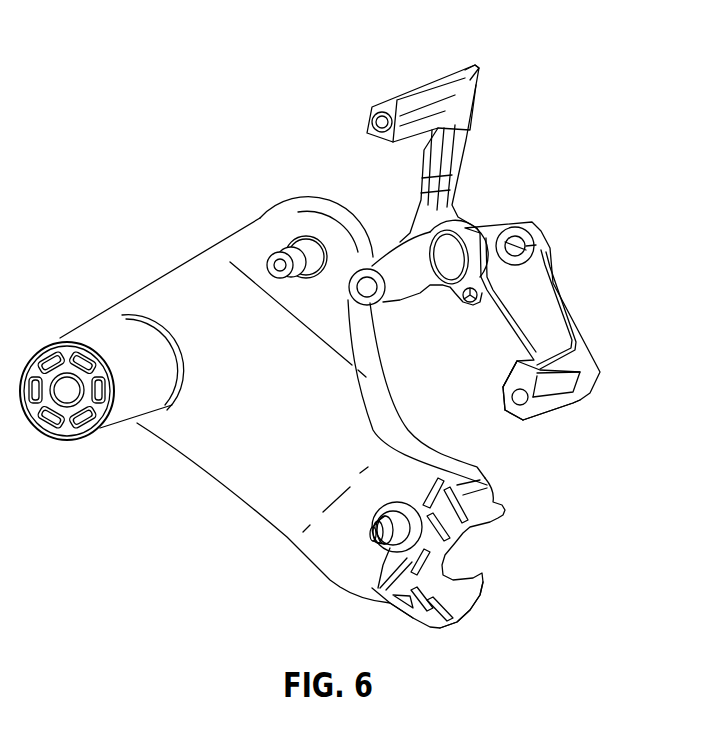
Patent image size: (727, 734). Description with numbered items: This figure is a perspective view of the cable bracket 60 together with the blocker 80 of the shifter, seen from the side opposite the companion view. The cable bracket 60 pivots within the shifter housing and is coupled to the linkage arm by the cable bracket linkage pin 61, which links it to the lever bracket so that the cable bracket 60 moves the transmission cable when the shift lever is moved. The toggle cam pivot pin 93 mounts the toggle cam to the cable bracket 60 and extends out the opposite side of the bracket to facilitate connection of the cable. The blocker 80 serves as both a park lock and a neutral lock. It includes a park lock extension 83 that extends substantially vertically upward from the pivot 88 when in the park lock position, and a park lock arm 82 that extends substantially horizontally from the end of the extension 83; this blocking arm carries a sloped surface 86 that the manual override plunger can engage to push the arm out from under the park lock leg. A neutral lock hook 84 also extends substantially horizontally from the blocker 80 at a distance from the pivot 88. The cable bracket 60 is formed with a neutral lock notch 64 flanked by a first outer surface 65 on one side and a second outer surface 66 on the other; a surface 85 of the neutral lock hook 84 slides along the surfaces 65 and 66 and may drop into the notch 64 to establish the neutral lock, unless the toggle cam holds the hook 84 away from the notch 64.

The cable bracket 60 is at (212, 440).
The cable bracket linkage pin 61 is at (277, 250).
The neutral lock notch 64 is at (478, 555).
The first outer surface 65 is at (490, 472).
The second outer surface 66 is at (472, 597).
The blocker 80 is at (558, 298).
The park lock arm 82 is at (402, 100).
The park lock extension 83 is at (470, 137).
The neutral lock hook 84 is at (560, 425).
The surface 85 is at (505, 405).
The sloped surface 86 is at (468, 80).
The pivot 88 is at (428, 253).
The toggle cam pivot pin 93 is at (372, 535).